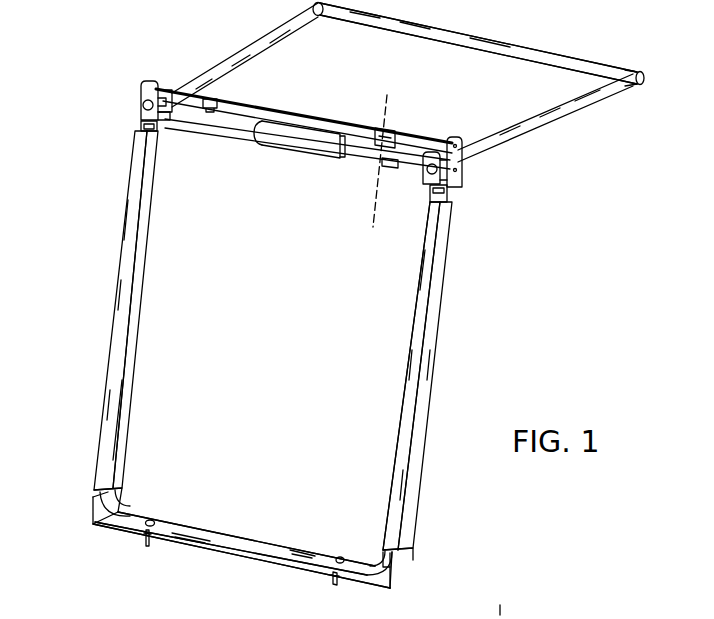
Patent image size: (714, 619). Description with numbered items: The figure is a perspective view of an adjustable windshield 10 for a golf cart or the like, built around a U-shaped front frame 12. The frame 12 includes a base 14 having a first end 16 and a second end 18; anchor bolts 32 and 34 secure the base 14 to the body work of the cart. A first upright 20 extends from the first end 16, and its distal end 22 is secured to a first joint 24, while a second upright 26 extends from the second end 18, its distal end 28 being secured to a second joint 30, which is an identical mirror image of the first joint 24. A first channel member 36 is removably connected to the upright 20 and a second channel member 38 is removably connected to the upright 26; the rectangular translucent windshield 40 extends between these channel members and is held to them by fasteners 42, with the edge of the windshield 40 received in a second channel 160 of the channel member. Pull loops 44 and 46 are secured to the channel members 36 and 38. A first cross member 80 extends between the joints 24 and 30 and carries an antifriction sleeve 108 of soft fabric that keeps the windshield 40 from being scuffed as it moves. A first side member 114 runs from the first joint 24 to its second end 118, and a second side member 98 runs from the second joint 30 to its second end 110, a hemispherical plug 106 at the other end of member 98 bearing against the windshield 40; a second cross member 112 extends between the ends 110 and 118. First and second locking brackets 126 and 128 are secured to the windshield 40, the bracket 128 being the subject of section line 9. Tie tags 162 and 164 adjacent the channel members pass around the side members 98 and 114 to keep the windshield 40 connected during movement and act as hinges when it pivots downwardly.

The adjustable windshield 10 is at (534, 26).
The front frame 12 is at (190, 254).
The base 14 is at (272, 558).
The first end 16 is at (128, 525).
The second end 18 is at (365, 574).
The first upright 20 is at (113, 527).
The distal end 22 is at (137, 123).
The first joint 24 is at (131, 94).
The second upright 26 is at (400, 562).
The distal end 28 is at (446, 188).
The second joint 30 is at (472, 187).
The anchor bolt 32 is at (148, 533).
The anchor bolt 34 is at (335, 580).
The first channel member 36 is at (122, 315).
The second channel member 38 is at (442, 278).
The translucent windshield 40 is at (385, 402).
The fasteners 42 is at (130, 252).
The pull loop 44 is at (97, 500).
The pull loop 46 is at (397, 570).
The first cross member 80 is at (357, 153).
The second side member 98 is at (563, 103).
The hemispherical plug 106 is at (393, 170).
The antifriction sleeve 108 is at (300, 138).
The second end 110 is at (605, 78).
The second cross member 112 is at (553, 58).
The first side member 114 is at (292, 35).
The second end 118 is at (493, 605).
The first locking bracket 126 is at (212, 98).
The second locking bracket 128 is at (393, 133).
The second channel 160 is at (117, 405).
The tie tag 162 is at (163, 120).
The tie tag 164 is at (462, 180).
The section line 9- 9 is at (340, 227).